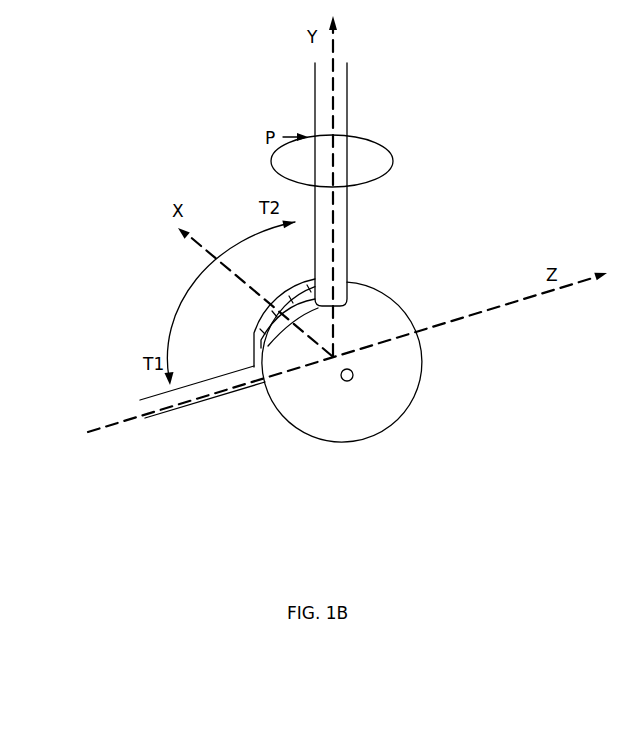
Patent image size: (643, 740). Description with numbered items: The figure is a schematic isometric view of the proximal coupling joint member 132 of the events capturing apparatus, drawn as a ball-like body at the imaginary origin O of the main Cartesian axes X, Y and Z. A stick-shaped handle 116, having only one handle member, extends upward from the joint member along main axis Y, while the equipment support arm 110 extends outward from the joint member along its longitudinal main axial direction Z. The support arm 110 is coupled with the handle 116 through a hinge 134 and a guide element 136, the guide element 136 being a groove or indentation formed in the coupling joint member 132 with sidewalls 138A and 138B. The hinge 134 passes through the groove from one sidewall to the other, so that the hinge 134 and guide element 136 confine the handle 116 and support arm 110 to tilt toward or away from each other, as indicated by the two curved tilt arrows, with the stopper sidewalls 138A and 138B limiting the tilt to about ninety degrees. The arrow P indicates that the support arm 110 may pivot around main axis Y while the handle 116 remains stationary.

The equipment support arm 110 is at (170, 411).
The handle 116 is at (311, 81).
The proximal coupling joint member 132 is at (328, 450).
The hinge 134 is at (365, 375).
The guide element 136 is at (266, 347).
The sidewall 138A is at (307, 298).
The sidewall 138B is at (257, 410).